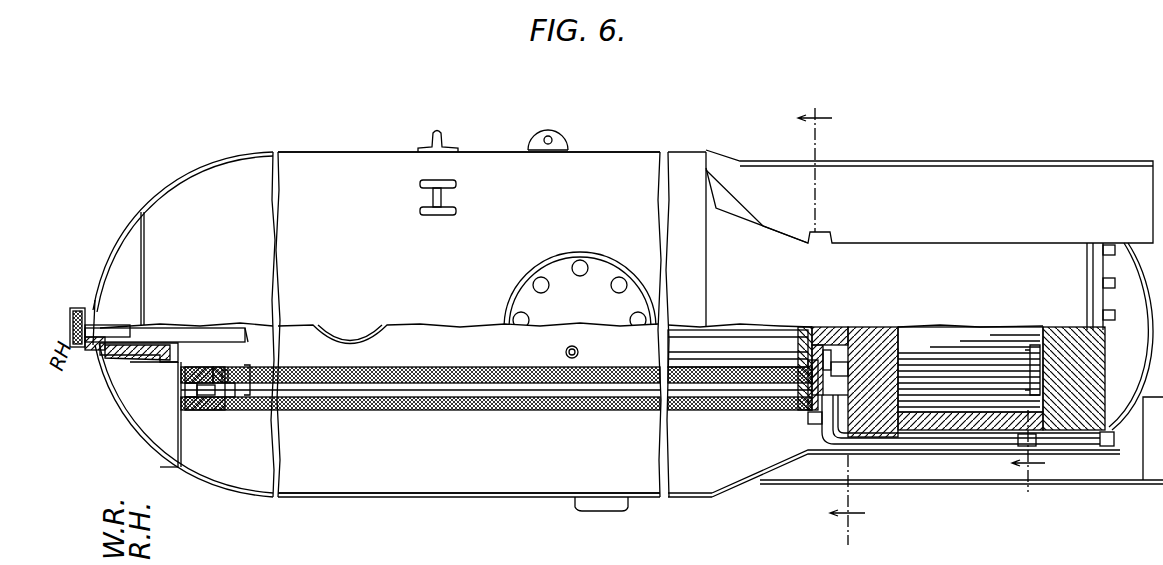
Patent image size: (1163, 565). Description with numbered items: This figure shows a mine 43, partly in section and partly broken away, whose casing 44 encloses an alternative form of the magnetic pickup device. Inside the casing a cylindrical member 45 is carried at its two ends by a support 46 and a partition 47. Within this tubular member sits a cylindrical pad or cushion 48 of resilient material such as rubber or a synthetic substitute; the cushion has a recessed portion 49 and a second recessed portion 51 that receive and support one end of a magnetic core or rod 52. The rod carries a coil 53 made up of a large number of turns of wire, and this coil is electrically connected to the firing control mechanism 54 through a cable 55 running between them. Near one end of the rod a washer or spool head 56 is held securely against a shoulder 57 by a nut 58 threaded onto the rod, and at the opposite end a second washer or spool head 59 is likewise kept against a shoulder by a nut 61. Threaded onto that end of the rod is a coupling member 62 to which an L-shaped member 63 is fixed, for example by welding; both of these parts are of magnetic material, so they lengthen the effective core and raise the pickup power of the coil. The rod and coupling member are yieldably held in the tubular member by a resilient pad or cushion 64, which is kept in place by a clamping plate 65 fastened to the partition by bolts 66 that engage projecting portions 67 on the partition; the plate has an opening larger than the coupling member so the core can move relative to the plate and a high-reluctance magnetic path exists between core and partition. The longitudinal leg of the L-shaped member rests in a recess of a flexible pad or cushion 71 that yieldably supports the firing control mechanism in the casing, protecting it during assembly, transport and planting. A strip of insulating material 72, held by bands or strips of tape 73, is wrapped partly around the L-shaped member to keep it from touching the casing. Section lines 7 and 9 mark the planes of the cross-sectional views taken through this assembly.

The section line 7- 7 is at (831, 316).
The section line 9- 9 is at (1028, 455).
The mine 43 is at (370, 143).
The casing 44 is at (624, 150).
The cylindrical member 45 is at (600, 411).
The support 46 is at (184, 465).
The partition 47 is at (800, 465).
The cylindrical pad or cushion 48 is at (218, 370).
The recessed portion 49 is at (192, 368).
The second recessed portion 51 is at (229, 372).
The magnetic core or rod 52 is at (740, 382).
The coil 53 is at (507, 410).
The firing control mechanism 54 is at (960, 330).
The cable 55 is at (1033, 348).
The washer or spool head 56 is at (247, 365).
The shoulder 57 is at (222, 395).
The nut 58 is at (205, 412).
The washer or spool head 59 is at (806, 410).
The nut 61 is at (800, 345).
The coupling member 62 is at (850, 352).
The L-shaped member 63 is at (853, 441).
The resilient pad or cushion 64 is at (828, 350).
The clamping plate 65 is at (836, 362).
The bolts 66 is at (824, 432).
The projecting portions 67 is at (806, 420).
The flexible pad or cushion 71 is at (1116, 437).
The strip of insulating material 72 is at (940, 452).
The bands or strips of tape 73 is at (912, 438).